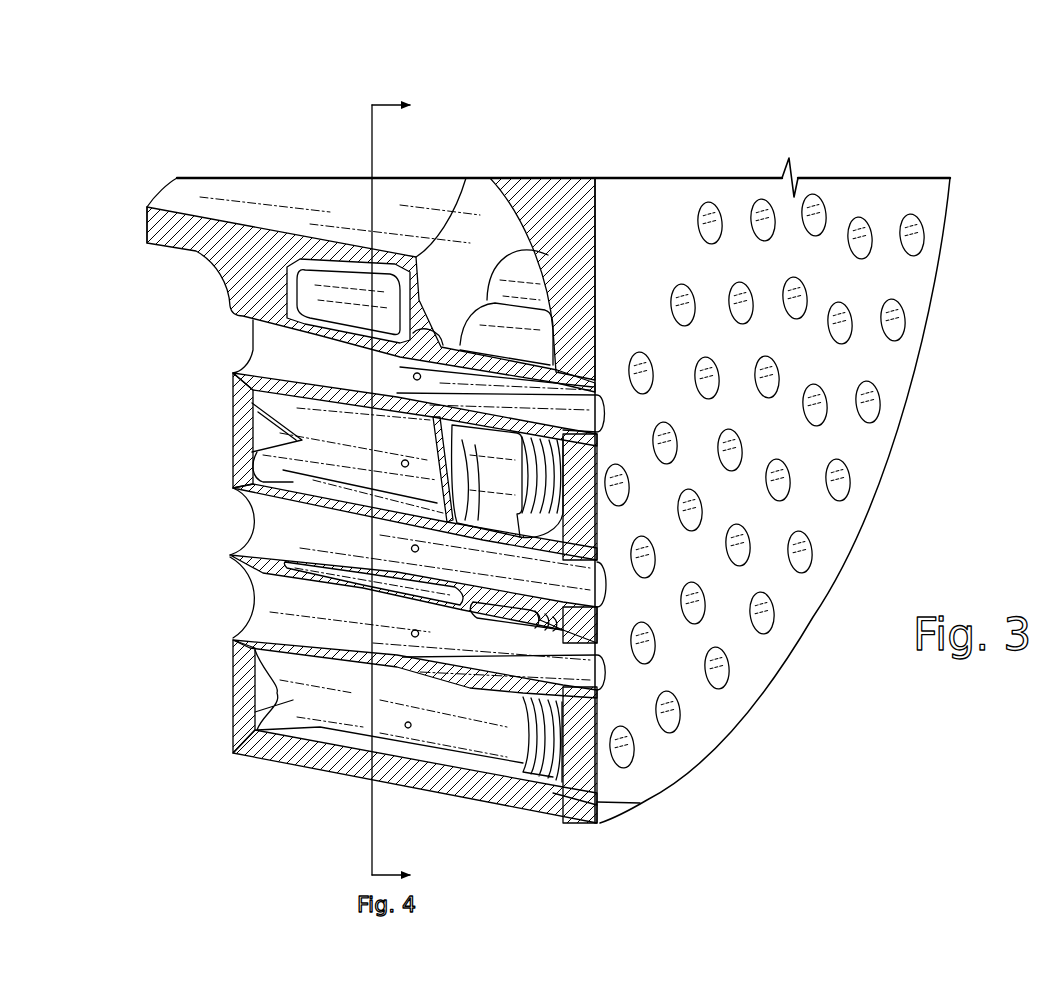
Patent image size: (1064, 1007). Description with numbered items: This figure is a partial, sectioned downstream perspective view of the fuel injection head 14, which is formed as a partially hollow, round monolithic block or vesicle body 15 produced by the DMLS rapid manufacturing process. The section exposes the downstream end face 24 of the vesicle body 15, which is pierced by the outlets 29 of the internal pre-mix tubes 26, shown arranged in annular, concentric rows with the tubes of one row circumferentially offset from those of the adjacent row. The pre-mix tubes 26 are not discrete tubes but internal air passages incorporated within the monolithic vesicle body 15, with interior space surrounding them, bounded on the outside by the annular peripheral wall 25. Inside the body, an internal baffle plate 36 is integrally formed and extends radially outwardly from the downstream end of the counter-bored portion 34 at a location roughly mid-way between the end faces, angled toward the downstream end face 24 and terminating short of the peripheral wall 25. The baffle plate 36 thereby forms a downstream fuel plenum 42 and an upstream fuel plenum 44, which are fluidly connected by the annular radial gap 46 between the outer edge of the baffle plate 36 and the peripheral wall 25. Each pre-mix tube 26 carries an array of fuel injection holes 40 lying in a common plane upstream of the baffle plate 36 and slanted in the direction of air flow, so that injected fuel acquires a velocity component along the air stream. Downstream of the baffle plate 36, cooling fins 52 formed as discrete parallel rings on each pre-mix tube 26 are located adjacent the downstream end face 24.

The fuel injection head 14 is at (882, 108).
The vesicle body 15 is at (748, 718).
The downstream end face 24 is at (898, 373).
The annular peripheral wall 25 is at (553, 827).
The pre-mix tubes 26 is at (232, 708).
The outlets 29 is at (922, 245).
The counter-bored portion 34 is at (273, 220).
The baffle plate 36 is at (481, 187).
The fuel injection holes 40 is at (412, 724).
The downstream fuel plenum 42 is at (480, 237).
The upstream fuel plenum 44 is at (331, 303).
The radial gap 46 is at (355, 743).
The cooling fins 52 is at (575, 798).